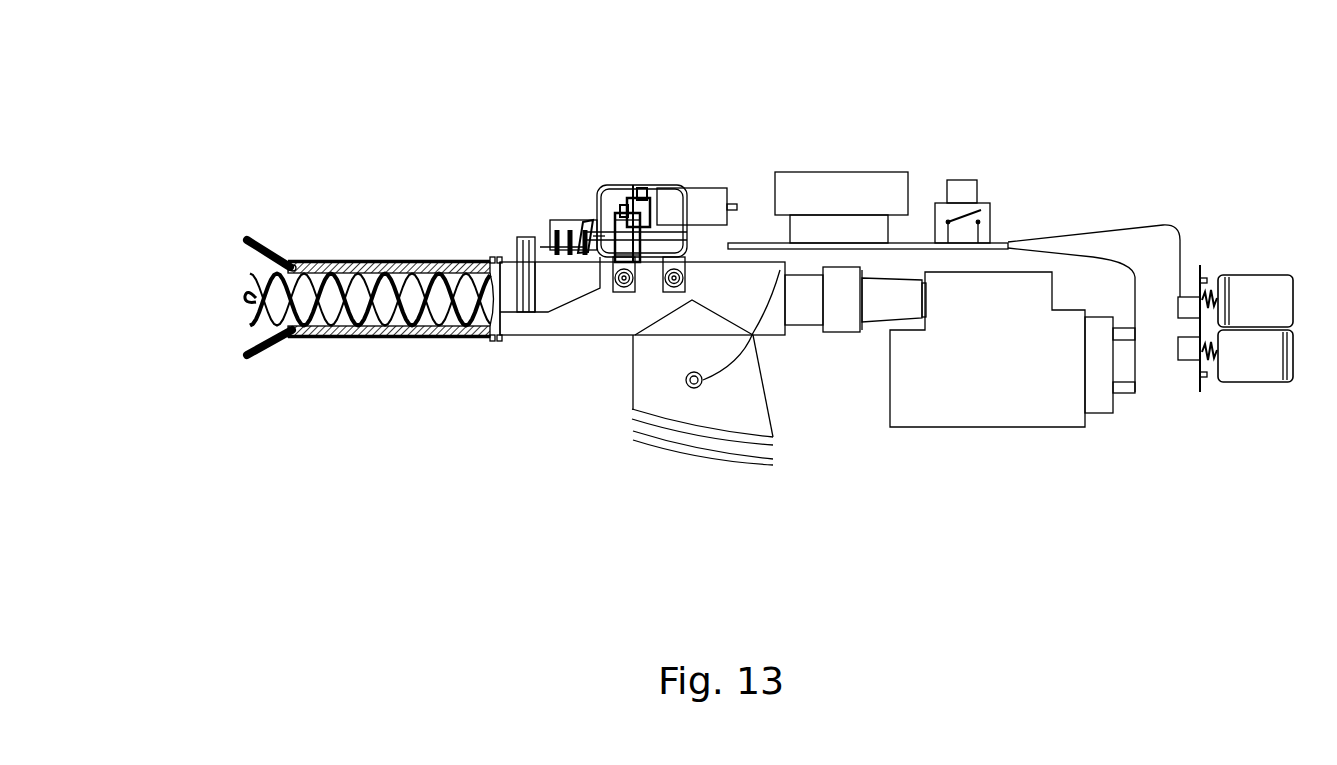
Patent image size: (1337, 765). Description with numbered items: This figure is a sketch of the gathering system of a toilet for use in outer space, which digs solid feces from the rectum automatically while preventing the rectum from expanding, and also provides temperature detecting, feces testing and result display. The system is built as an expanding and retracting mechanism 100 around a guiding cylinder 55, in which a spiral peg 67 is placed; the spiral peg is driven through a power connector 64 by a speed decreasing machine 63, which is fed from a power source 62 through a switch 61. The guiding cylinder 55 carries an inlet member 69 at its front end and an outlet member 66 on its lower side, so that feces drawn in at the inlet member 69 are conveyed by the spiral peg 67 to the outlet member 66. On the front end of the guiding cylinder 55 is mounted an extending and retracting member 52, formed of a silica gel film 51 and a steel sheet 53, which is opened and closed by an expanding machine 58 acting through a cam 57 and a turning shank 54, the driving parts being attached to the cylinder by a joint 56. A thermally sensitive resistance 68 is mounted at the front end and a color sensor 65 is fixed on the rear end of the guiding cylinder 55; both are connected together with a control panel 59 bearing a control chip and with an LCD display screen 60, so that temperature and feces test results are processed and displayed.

The silica gel film 51 is at (244, 237).
The extending and retracting member 52 is at (248, 230).
The steel sheet 53 is at (278, 247).
The turning shank 54 is at (292, 255).
The guiding cylinder 55 is at (500, 257).
The joint 56 is at (542, 242).
The cam 57 is at (583, 210).
The expanding machine 58 is at (710, 197).
The control panel 59 is at (760, 242).
The LCD display screen 60 is at (852, 177).
The switch 61 is at (963, 185).
The power source 62 is at (1262, 290).
The speed decreasing machine 63 is at (1102, 407).
The power connector 64 is at (860, 337).
The color sensor 65 is at (700, 395).
The outlet member 66 is at (697, 470).
The spiral peg 67 is at (392, 327).
The thermally sensitive resistance 68 is at (268, 360).
The inlet member 69 is at (207, 303).
The expanding and retracting mechanism 100 is at (233, 383).